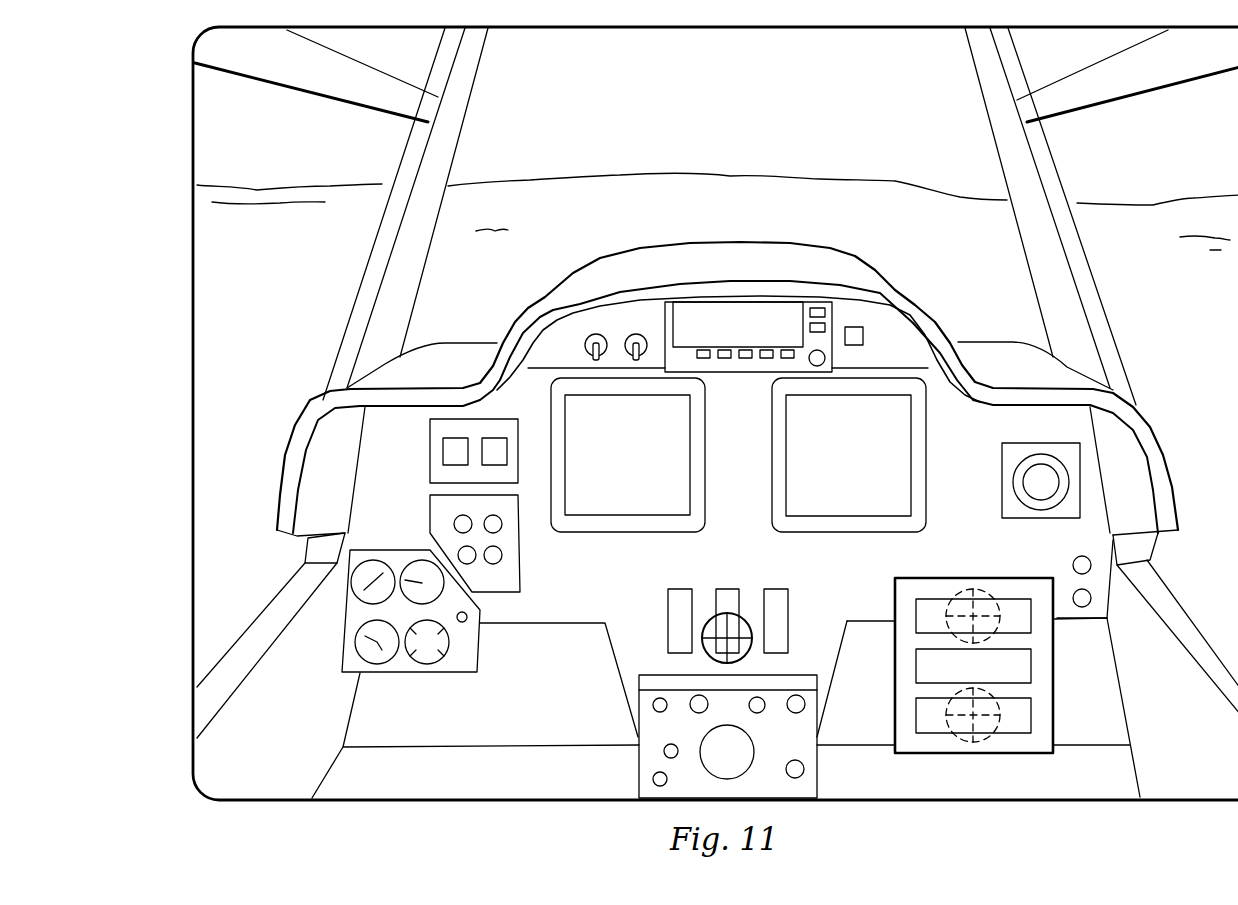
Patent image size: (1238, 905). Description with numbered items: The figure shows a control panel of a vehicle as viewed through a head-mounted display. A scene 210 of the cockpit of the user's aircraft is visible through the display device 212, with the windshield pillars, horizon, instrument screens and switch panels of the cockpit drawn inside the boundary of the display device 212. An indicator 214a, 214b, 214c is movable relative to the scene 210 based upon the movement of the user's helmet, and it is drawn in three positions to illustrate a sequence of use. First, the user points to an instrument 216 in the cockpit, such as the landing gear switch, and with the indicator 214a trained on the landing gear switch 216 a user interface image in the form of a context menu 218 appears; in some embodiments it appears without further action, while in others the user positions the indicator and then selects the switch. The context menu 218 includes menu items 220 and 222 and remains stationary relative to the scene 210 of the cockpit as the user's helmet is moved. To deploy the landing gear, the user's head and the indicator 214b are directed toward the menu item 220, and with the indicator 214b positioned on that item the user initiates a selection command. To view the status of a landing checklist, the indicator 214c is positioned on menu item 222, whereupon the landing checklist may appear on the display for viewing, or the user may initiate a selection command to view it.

The scene 210 is at (140, 217).
The display device 212 is at (193, 383).
The indicator 214a is at (705, 627).
The indicator 214b is at (957, 592).
The indicator 214c is at (987, 738).
The instrument 216 is at (728, 587).
The context menu 218 is at (992, 655).
The menu item 220 is at (922, 614).
The menu item 222 is at (1022, 715).